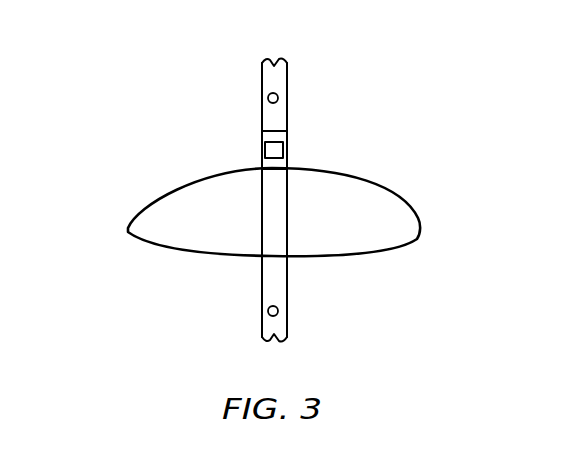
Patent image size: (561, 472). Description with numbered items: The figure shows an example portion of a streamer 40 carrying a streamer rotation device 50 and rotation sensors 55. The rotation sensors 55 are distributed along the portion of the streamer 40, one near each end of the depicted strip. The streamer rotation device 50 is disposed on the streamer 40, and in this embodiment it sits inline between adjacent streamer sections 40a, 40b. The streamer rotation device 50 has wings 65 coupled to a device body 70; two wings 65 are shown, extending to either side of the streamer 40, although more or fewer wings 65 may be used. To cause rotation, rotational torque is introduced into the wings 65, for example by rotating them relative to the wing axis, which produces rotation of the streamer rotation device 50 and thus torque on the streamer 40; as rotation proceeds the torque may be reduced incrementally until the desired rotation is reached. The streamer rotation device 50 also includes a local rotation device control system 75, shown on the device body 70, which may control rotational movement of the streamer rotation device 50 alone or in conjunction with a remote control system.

The streamer 40 is at (262, 114).
The streamer section 40a is at (262, 75).
The streamer section 40b is at (287, 272).
The streamer rotation device 50 is at (356, 163).
The rotation sensor 55 is at (278, 95).
The wing 65 is at (147, 196).
The device body 70 is at (283, 150).
The local rotation device control system 75 is at (265, 150).